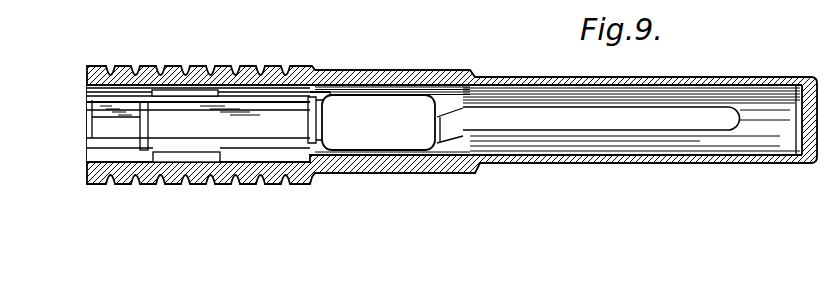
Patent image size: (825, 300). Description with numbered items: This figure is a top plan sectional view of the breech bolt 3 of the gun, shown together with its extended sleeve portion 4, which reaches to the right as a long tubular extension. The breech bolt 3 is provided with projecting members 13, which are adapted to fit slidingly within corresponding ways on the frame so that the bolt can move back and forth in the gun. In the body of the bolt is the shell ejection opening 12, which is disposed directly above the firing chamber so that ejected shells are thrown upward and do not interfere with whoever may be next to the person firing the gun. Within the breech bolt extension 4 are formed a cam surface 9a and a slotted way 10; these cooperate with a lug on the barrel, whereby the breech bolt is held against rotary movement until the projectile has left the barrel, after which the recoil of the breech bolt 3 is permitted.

The breech bolt 3 is at (88, 107).
The extended sleeve portion 4 is at (642, 157).
The cam surface 9a is at (453, 125).
The slotted way 10 is at (565, 117).
The shell ejection opening 12 is at (378, 122).
The projecting members 13 is at (190, 160).